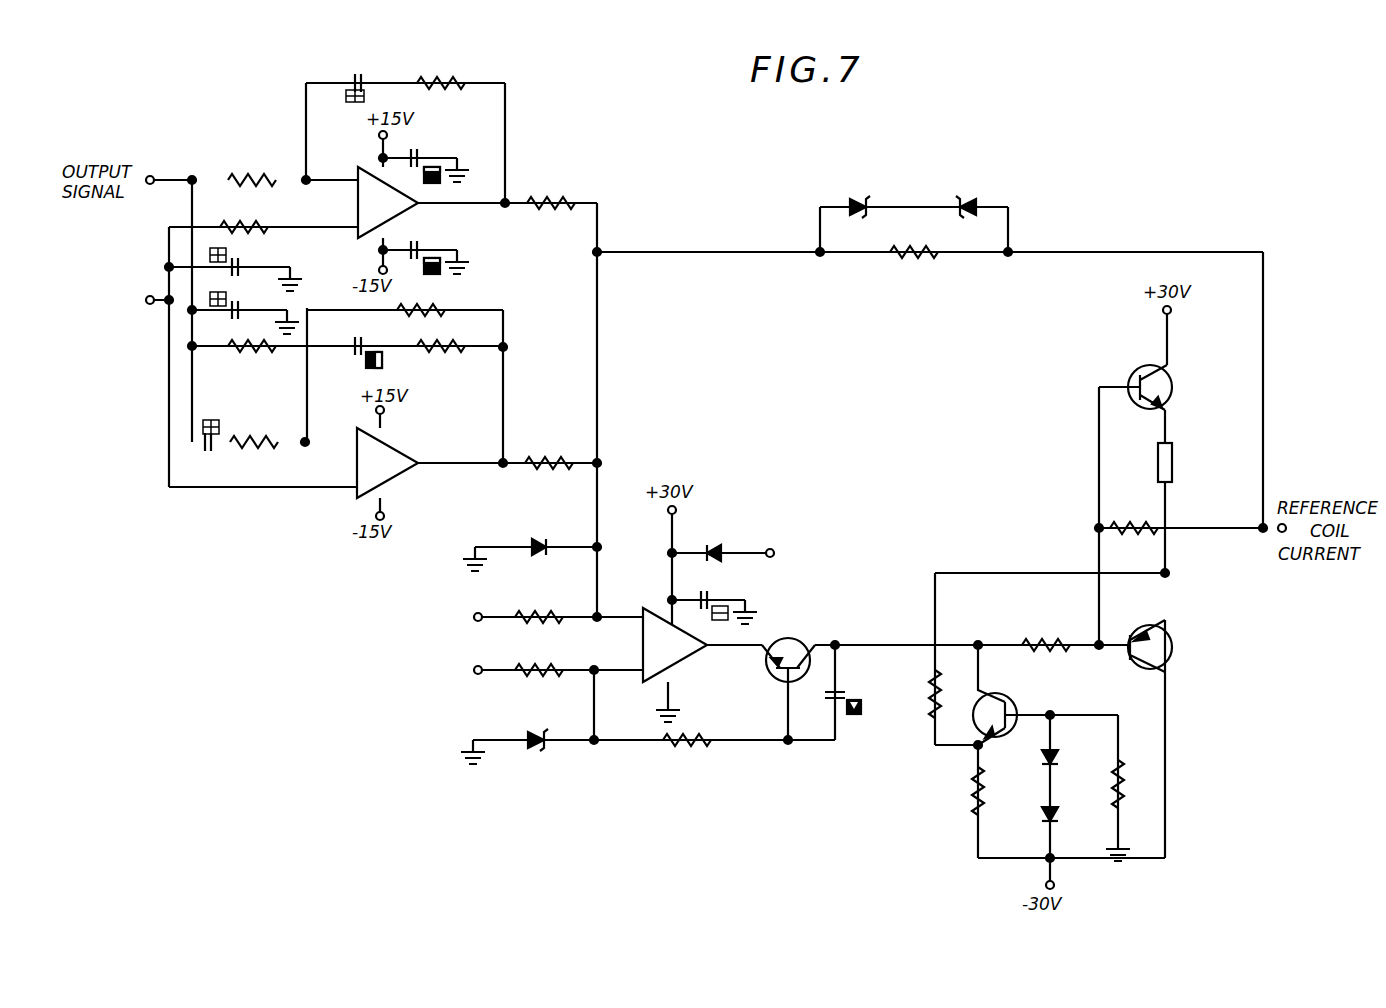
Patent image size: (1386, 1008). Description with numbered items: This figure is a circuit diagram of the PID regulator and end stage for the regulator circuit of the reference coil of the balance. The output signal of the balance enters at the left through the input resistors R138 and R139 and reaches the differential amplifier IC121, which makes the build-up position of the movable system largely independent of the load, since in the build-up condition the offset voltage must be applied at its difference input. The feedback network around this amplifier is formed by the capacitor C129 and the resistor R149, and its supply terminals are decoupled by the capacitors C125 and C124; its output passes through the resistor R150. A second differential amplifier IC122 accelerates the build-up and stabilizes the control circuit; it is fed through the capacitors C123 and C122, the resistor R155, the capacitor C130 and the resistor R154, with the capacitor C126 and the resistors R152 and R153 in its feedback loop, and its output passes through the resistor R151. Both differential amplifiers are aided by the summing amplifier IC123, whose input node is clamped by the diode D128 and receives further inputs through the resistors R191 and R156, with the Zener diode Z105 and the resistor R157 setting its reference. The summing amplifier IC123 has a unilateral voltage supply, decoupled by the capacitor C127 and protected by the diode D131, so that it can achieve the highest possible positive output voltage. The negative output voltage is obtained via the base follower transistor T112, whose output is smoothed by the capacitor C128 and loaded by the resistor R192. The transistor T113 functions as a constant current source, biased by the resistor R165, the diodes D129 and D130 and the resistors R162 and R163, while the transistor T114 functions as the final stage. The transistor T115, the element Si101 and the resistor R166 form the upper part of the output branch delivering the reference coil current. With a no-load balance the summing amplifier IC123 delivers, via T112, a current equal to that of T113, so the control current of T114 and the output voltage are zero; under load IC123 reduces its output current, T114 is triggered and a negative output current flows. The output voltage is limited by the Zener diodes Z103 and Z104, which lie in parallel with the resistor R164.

The resistor R138 is at (255, 166).
The resistor R139 is at (256, 213).
The capacitor C129 is at (368, 61).
The resistor R149 is at (440, 70).
The differential amplifier IC121 is at (388, 202).
The capacitor C125 is at (420, 142).
The capacitor C124 is at (418, 240).
The resistor R150 is at (553, 198).
The capacitor C123 is at (244, 256).
The capacitor C122 is at (252, 297).
The resistor R155 is at (252, 353).
The capacitor C126 is at (358, 356).
The resistor R152 is at (440, 353).
The resistor R153 is at (417, 303).
The capacitor C130 is at (212, 432).
The resistor R154 is at (240, 450).
The differential amplifier IC122 is at (387, 463).
The resistor R151 is at (548, 456).
The diode D128 is at (545, 520).
The resistor R191 is at (548, 600).
The resistor R156 is at (553, 655).
The zener diode Z105 is at (536, 732).
The resistor R157 is at (687, 749).
The summing amplifier IC123 is at (675, 645).
The diode D131 is at (740, 526).
The capacitor C127 is at (705, 588).
The base follower transistor T112 is at (790, 644).
The capacitor C128 is at (866, 682).
The resistor R192 is at (920, 710).
The resistor R165 is at (1049, 630).
The constant current source transistor T113 is at (1004, 694).
The diode D129 is at (1064, 760).
The diode D130 is at (1038, 816).
The resistor R162 is at (970, 782).
The resistor R163 is at (1113, 779).
The final stage transistor T114 is at (1172, 650).
The transistor T115 is at (1172, 388).
The silicon diode Si101 is at (1196, 462).
The resistor R166 is at (1136, 521).
The Zener diode Z104 is at (854, 194).
The Zener diode Z103 is at (970, 194).
The resistor R164 is at (912, 262).